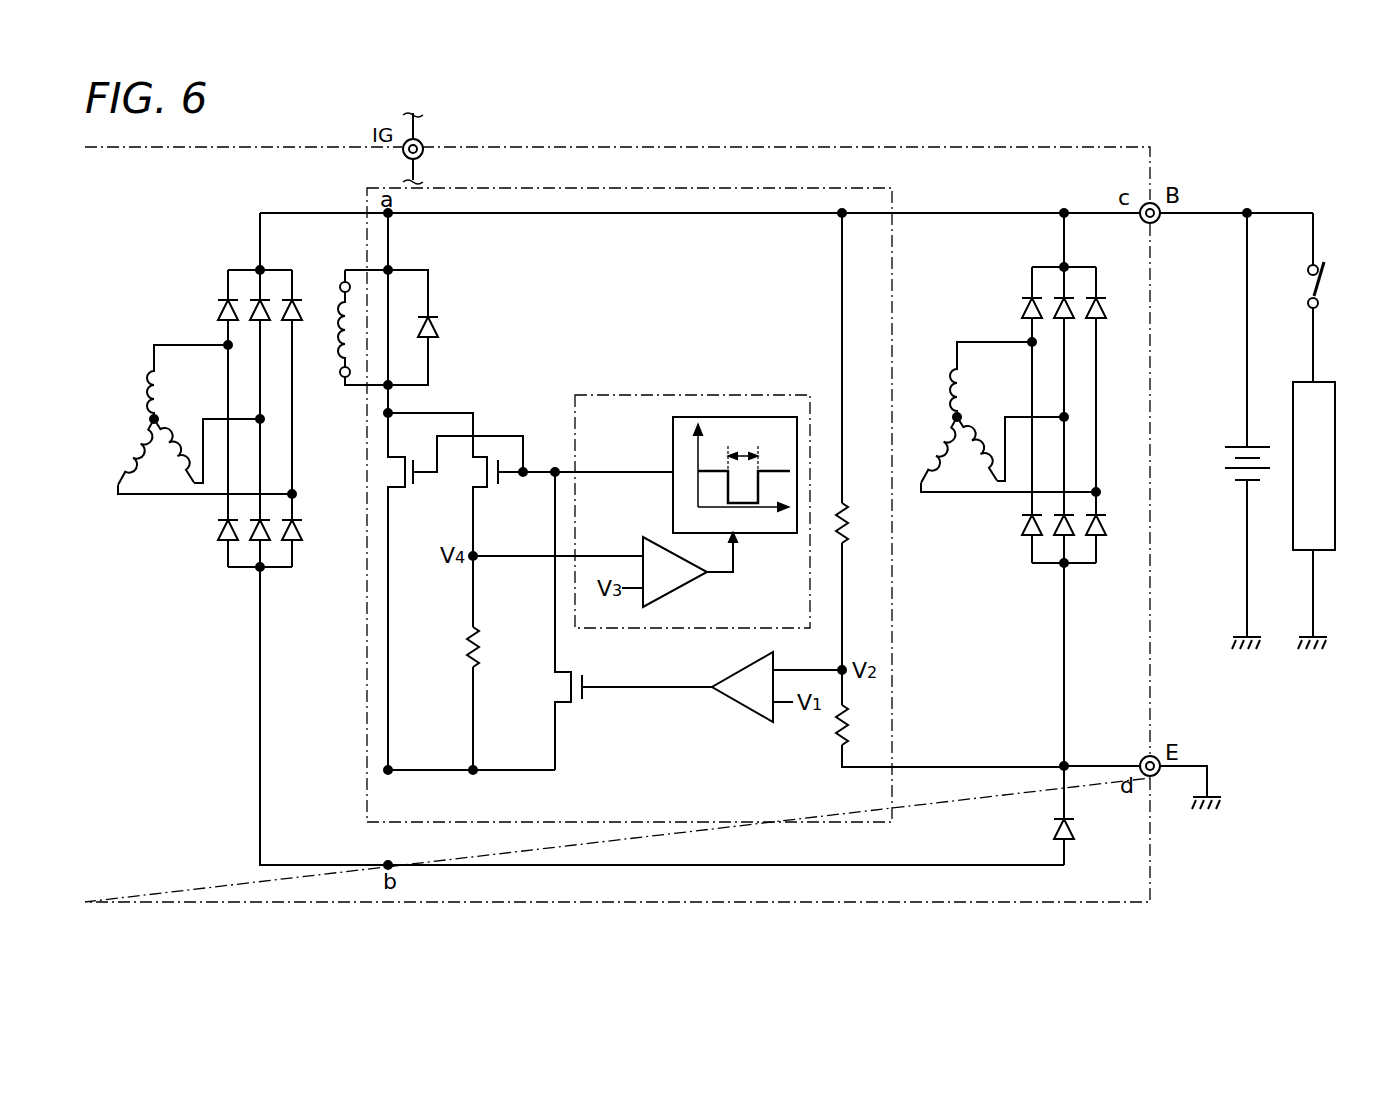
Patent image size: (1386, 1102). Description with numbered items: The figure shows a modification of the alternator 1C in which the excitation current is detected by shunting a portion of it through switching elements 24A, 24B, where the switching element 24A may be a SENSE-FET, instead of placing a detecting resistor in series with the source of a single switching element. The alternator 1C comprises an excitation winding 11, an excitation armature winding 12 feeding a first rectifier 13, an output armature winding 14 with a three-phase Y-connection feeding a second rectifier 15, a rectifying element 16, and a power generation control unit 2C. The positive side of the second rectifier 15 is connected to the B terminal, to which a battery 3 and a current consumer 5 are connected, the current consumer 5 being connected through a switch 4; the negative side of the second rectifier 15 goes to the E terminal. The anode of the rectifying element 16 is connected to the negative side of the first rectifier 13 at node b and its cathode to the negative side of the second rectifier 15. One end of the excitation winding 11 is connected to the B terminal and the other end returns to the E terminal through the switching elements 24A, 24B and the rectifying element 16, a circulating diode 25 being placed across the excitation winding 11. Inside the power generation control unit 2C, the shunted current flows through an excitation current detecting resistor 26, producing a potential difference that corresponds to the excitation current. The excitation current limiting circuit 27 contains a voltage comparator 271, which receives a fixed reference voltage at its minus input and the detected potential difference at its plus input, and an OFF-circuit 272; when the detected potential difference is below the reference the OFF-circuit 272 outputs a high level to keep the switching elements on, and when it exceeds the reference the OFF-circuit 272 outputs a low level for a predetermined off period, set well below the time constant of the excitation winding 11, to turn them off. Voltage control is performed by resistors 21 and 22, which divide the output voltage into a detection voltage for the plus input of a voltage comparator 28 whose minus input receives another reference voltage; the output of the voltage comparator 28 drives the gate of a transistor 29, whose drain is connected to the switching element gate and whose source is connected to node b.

The alternator 1C is at (1127, 147).
The power generation control unit 2C is at (856, 188).
The battery 3 is at (1258, 447).
The switch 4 is at (1326, 282).
The current consumer 5 is at (1320, 382).
The excitation winding 11 is at (335, 300).
The excitation armature winding 12 is at (150, 417).
The first rectifier 13 is at (238, 270).
The output armature winding 14 is at (954, 415).
The second rectifier 15 is at (1040, 267).
The rectifying element 16 is at (1060, 819).
The resistor 21 is at (850, 512).
The resistor 22 is at (836, 736).
The switching element 24A is at (482, 492).
The switching element 24B is at (394, 492).
The circulating diode 25 is at (434, 318).
The excitation current detecting resistor 26 is at (481, 642).
The excitation current limiting circuit 27 is at (782, 395).
The voltage comparator 28 is at (747, 708).
The transistor 29 is at (566, 706).
The voltage comparator 271 is at (688, 590).
The OFF-circuit 272 is at (673, 446).